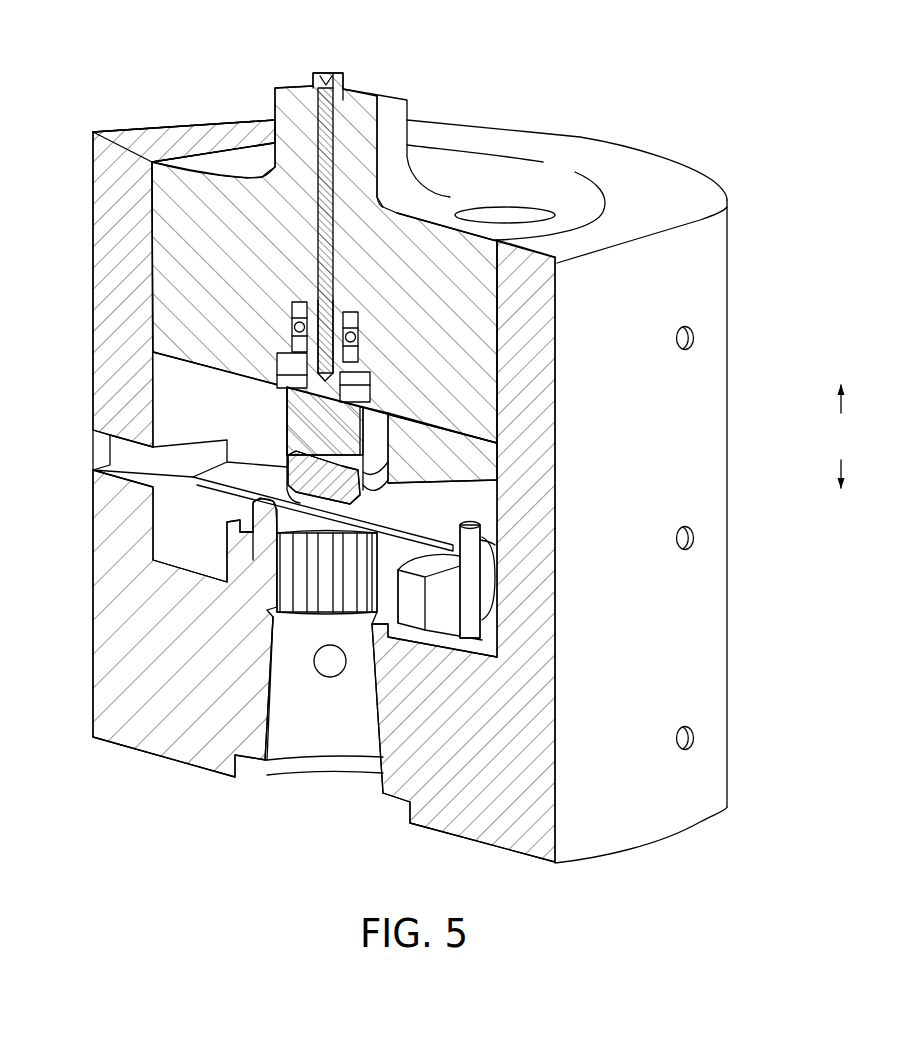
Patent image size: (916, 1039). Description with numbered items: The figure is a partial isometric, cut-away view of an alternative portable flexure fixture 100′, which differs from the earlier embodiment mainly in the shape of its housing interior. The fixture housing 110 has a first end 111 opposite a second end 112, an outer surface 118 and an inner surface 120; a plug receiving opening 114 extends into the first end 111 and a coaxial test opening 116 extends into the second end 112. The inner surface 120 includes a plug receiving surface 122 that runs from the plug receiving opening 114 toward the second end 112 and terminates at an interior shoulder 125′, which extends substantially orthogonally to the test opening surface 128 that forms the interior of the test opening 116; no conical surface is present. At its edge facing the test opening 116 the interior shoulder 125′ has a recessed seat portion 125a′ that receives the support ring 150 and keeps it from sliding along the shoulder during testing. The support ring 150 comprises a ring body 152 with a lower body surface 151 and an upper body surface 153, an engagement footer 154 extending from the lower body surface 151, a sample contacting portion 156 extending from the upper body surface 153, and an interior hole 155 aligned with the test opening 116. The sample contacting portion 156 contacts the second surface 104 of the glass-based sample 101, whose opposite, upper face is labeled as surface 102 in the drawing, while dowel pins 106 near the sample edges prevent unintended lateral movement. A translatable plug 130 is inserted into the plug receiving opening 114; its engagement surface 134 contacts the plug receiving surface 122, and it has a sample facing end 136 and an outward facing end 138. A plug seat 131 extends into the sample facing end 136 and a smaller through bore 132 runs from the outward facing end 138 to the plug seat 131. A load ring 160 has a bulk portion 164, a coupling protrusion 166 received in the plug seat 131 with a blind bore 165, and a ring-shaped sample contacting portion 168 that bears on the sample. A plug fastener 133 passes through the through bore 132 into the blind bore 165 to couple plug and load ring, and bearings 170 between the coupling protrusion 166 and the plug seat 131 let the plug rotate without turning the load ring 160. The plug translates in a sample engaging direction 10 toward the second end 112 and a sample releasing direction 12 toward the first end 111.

The sample engaging direction 10 is at (841, 460).
The sample releasing direction 12 is at (841, 413).
The portable flexure fixture 100′ is at (652, 112).
The glass-based sample 101 is at (486, 516).
The pin 102 is at (462, 526).
The second surface 104 is at (420, 537).
The dowel pins 106 is at (472, 632).
The fixture housing 110 is at (688, 142).
The first end 111 is at (476, 115).
The second end 112 is at (502, 858).
The plug receiving opening 114 is at (197, 120).
The test opening 116 is at (328, 771).
The outer surface 118 is at (93, 300).
The inner surface 120 is at (152, 433).
The plug receiving surface 122 is at (152, 252).
The interior shoulder 125′ is at (198, 560).
The seat portion 125a′ is at (272, 690).
The test opening surface 128 is at (270, 757).
The translatable plug 130 is at (500, 241).
The plug seat 131 is at (352, 368).
The through bore 132 is at (313, 142).
The plug fastener 133 is at (333, 208).
The engagement surface 134 is at (155, 215).
The sample facing end 136 is at (197, 362).
The outward facing end 138 is at (183, 148).
The support ring 150 is at (255, 522).
The lower body surface 151 is at (240, 575).
The ring body 152 is at (240, 540).
The upper body surface 153 is at (240, 520).
The engagement footer 154 is at (268, 605).
The interior hole 155 is at (352, 612).
The sample contacting portion 156 is at (392, 570).
The load ring 160 is at (390, 485).
The bulk portion 164 is at (340, 436).
The blind bore 165 is at (337, 298).
The coupling protrusion 166 is at (305, 378).
The sample contacting portion 168 is at (320, 495).
The bearings 170 is at (362, 314).